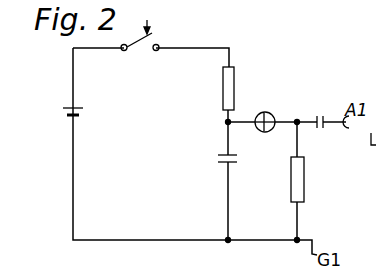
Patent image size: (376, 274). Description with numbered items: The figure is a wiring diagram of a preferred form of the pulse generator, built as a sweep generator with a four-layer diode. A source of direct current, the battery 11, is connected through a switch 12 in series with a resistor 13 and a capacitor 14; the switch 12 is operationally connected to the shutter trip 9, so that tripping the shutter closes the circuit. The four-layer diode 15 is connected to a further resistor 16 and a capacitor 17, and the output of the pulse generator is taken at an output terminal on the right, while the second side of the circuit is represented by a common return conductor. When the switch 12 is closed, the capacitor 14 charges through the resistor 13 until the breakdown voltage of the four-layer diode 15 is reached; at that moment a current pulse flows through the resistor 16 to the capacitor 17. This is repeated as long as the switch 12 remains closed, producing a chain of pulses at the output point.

The shutter trip 9 is at (159, 25).
The battery 11 is at (89, 101).
The switch 12 is at (140, 54).
The resistor 13 is at (232, 90).
The capacitor 14 is at (232, 161).
The four-layer diode 15 is at (271, 113).
The further resistor 16 is at (298, 185).
The capacitor 17 is at (319, 115).